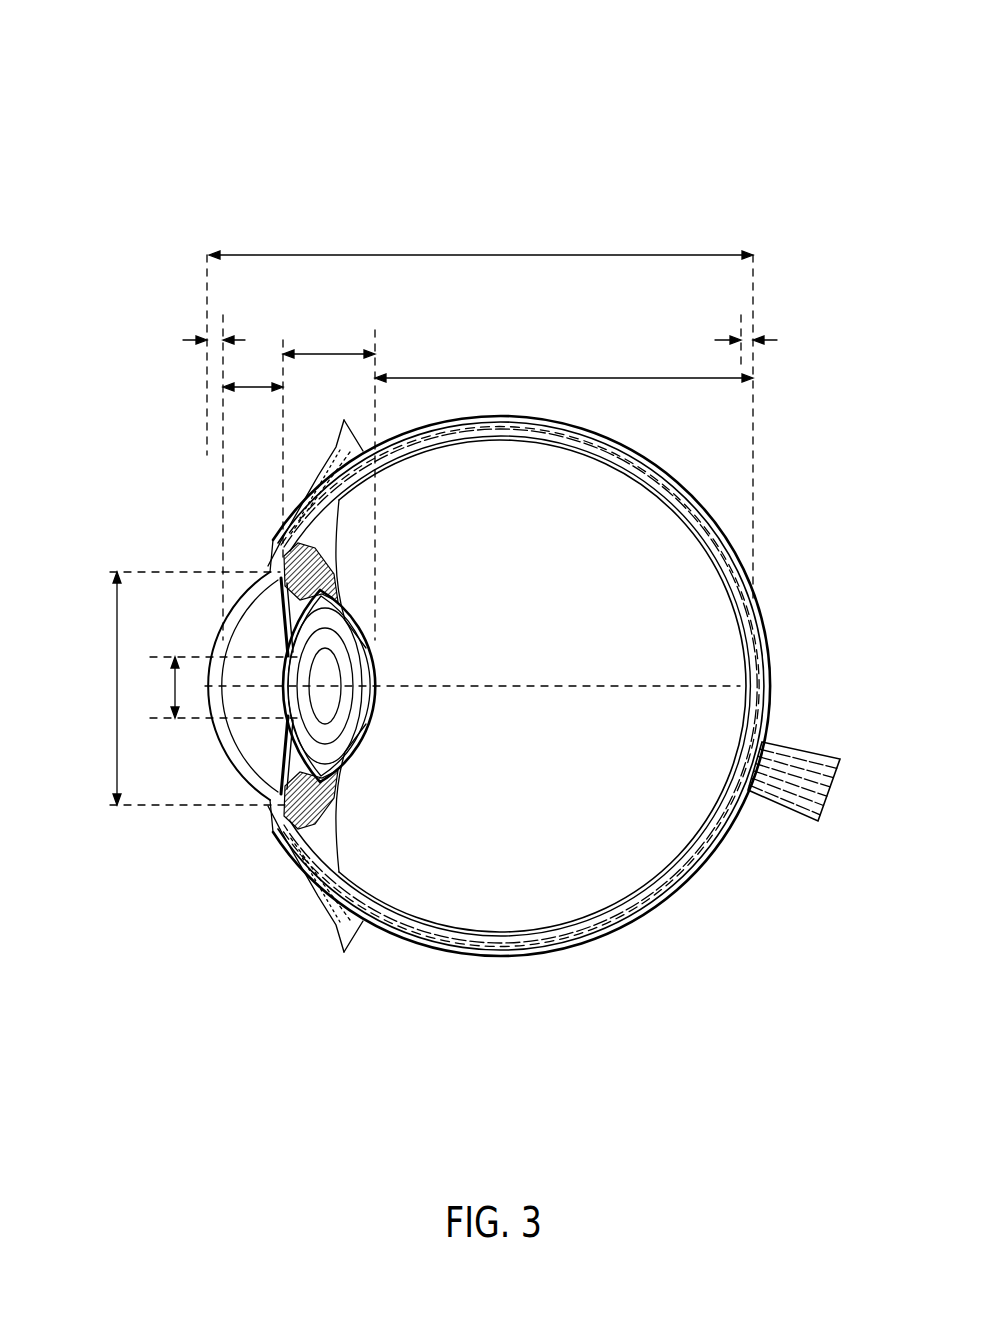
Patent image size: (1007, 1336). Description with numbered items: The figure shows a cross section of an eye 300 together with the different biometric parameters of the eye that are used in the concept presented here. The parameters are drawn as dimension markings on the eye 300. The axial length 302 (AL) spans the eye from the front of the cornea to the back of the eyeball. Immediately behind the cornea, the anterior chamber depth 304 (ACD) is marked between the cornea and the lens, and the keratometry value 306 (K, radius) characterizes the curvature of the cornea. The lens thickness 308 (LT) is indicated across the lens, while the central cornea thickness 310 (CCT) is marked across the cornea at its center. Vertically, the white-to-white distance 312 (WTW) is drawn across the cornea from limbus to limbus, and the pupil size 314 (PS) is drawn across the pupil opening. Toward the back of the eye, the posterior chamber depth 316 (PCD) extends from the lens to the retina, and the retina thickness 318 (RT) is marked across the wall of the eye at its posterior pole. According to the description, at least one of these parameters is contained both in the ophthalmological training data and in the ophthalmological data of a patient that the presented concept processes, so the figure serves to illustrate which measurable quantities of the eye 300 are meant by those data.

The eye 300 is at (481, 492).
The axial length 302 is at (480, 404).
The anterior chamber depth 304 is at (253, 405).
The keratometry value 306 is at (256, 620).
The lens thickness 308 is at (329, 475).
The central cornea thickness 310 is at (214, 461).
The white-to-white distance 312 is at (171, 688).
The pupil size 314 is at (224, 707).
The posterior chamber depth 316 is at (564, 356).
The retina thickness 318 is at (773, 327).